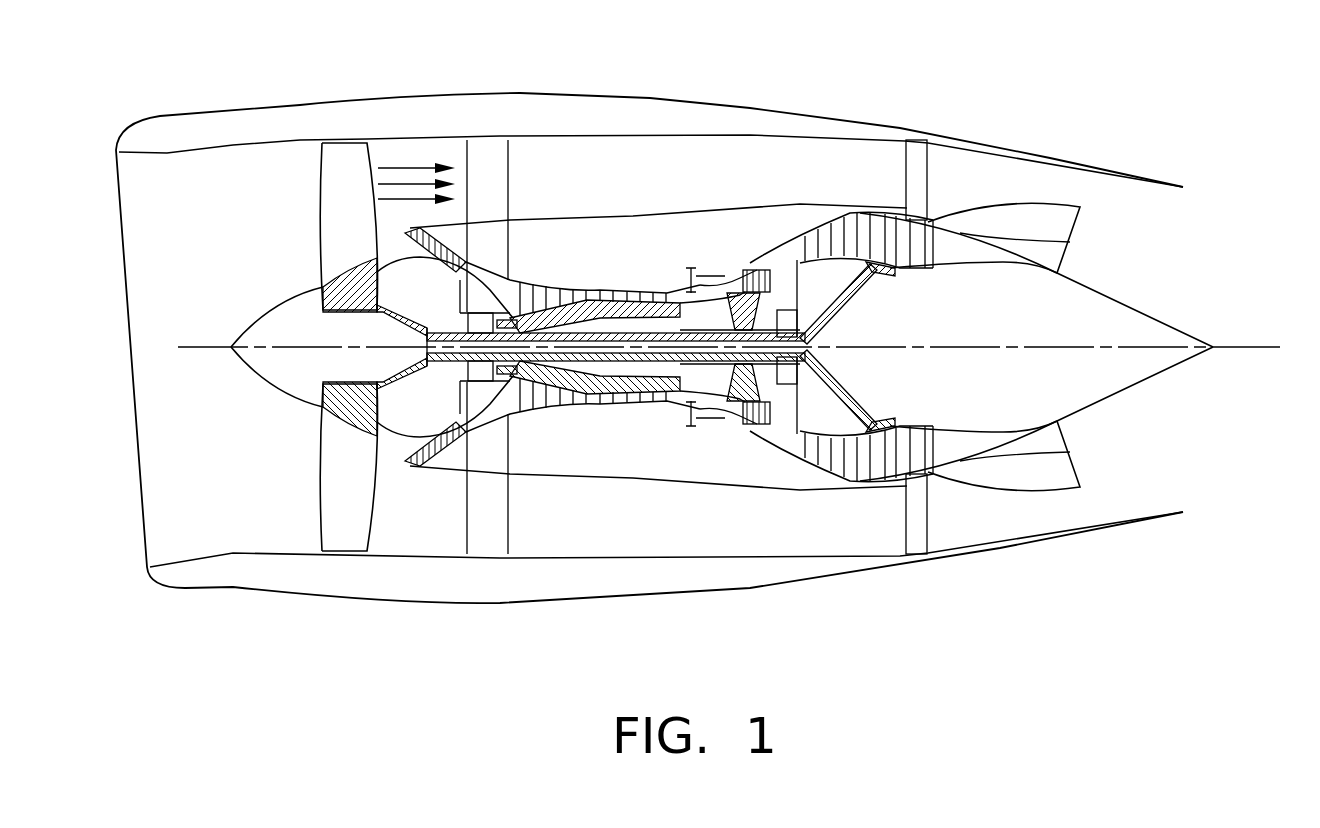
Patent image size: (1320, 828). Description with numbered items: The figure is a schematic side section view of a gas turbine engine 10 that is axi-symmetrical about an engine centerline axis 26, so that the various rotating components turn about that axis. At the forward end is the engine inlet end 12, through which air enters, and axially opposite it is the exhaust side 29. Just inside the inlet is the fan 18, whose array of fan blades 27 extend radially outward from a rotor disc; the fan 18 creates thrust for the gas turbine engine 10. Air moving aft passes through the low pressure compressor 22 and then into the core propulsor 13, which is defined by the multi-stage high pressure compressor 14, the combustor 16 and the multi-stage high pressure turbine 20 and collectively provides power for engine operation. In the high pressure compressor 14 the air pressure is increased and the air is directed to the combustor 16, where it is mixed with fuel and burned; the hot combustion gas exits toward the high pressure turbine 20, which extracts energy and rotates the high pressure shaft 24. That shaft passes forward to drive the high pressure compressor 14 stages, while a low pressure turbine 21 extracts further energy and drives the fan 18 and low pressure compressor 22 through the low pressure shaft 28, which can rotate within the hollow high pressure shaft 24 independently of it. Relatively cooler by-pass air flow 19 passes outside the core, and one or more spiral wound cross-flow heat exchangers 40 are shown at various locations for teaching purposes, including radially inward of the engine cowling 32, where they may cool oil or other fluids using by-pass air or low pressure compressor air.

The gas turbine engine 10 is at (947, 75).
The engine inlet end 12 is at (130, 185).
The core propulsor 13 is at (654, 198).
The multi-stage high pressure compressor 14 is at (550, 275).
The combustor 16 is at (713, 258).
The fan 18 is at (290, 204).
The by-pass air flow 19 is at (407, 168).
The multi-stage high pressure turbine 20 is at (764, 255).
The low pressure turbine 21 is at (880, 283).
The low pressure compressor 22 is at (452, 220).
The high pressure shaft 24 is at (690, 407).
The engine centerline axis 26 is at (1270, 347).
The fan blades 27 is at (345, 483).
The low pressure shaft 28 is at (602, 363).
The exhaust side 29 is at (1138, 212).
The engine cowling 32 is at (700, 213).
The spiral wound cross-flow heat exchanger 40 is at (545, 215).